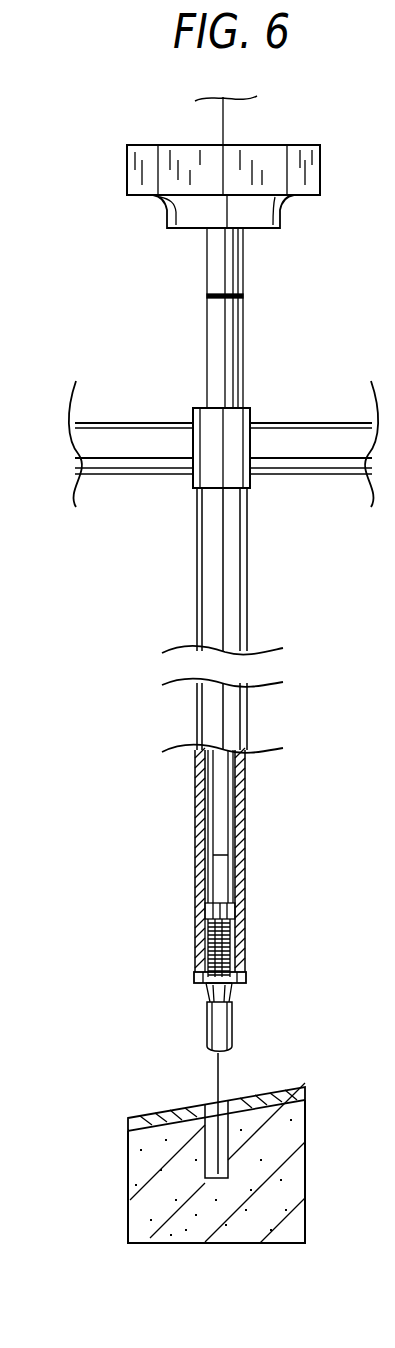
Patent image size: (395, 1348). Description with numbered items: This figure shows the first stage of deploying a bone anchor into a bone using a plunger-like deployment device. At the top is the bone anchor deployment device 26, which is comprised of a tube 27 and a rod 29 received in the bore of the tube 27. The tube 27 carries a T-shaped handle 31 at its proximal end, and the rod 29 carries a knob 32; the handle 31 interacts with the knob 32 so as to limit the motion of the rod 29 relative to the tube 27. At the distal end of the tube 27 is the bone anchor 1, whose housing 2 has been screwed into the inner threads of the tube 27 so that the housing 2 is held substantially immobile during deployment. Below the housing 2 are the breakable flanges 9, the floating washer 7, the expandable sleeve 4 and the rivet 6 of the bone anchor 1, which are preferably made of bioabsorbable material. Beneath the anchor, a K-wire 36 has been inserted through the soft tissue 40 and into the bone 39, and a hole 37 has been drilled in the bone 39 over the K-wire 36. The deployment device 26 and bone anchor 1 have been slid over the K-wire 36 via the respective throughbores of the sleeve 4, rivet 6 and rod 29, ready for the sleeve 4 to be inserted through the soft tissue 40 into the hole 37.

The bone anchor 1 is at (156, 918).
The housing 2 is at (195, 957).
The expandable sleeve 4 is at (208, 1014).
The rivet 6 is at (245, 957).
The floating washer 7 is at (247, 973).
The breakable flanges 9 is at (195, 985).
The bone anchor deployment device 26 is at (138, 552).
The tube 27 is at (197, 625).
The rod 29 is at (224, 870).
The T-shaped handle 31 is at (210, 428).
The knob 32 is at (141, 146).
The K-wire 36 is at (232, 1035).
The hole 37 is at (200, 1090).
The bone 39 is at (128, 1170).
The soft tissue 40 is at (137, 1118).